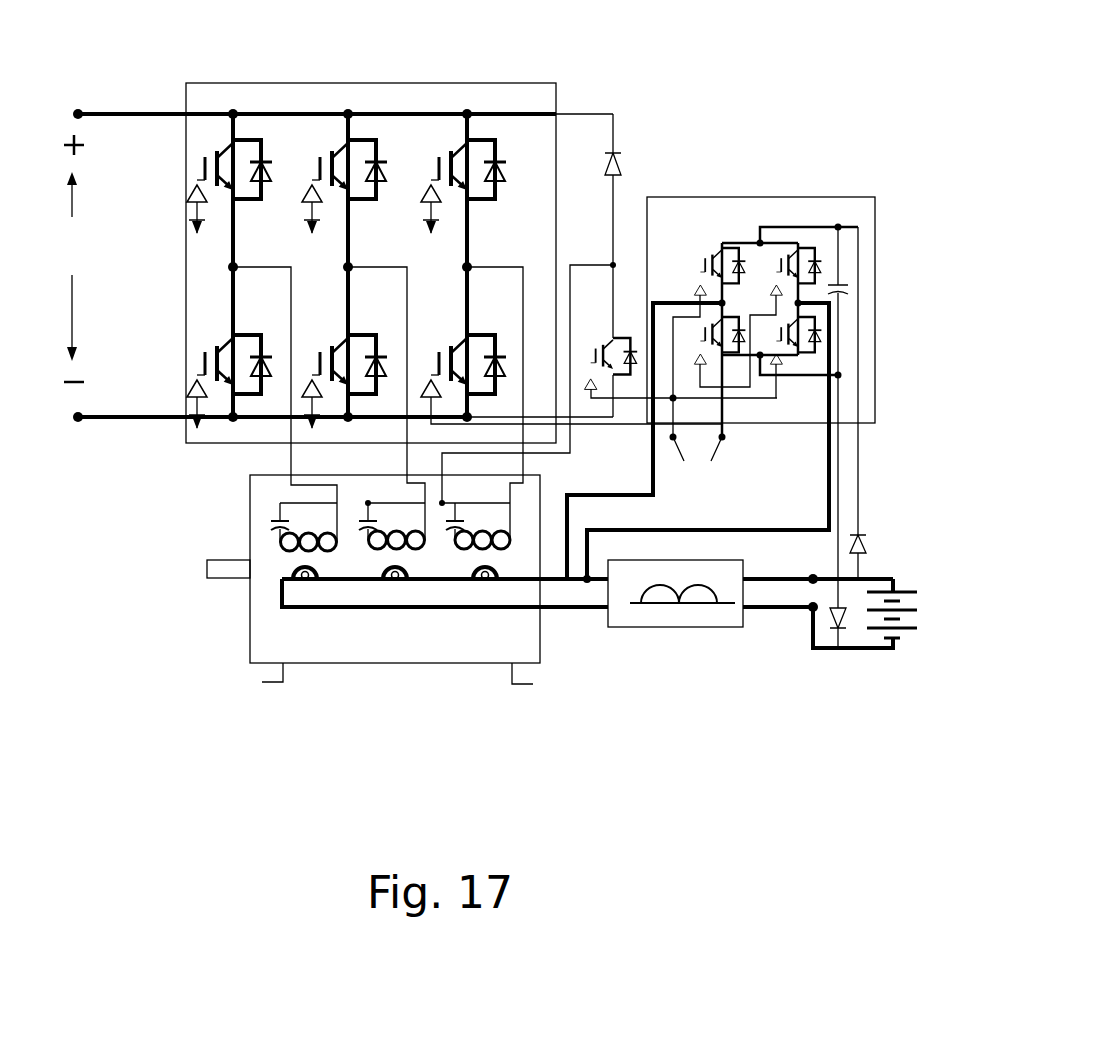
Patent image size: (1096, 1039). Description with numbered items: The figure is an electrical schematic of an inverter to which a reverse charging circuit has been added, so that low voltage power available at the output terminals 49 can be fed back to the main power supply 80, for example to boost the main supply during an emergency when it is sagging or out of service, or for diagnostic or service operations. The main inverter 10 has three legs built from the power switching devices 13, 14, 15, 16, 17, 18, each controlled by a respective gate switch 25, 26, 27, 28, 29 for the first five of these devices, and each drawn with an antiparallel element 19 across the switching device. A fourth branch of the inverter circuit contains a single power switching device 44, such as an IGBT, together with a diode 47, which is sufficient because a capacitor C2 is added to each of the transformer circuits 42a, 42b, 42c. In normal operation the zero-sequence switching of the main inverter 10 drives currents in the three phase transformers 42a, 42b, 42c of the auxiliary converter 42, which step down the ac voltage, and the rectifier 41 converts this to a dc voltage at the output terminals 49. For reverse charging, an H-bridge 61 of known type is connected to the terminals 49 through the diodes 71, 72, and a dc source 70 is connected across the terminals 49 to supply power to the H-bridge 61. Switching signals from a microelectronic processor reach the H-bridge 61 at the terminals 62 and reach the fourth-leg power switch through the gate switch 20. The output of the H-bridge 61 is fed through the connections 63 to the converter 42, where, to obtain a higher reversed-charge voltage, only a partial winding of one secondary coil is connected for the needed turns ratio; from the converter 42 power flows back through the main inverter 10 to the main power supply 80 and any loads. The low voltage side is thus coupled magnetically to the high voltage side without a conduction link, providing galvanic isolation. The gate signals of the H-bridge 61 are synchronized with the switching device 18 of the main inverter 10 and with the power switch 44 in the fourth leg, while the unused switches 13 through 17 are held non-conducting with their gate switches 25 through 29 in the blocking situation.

The main inverter 10 is at (561, 104).
The power switching device 13 is at (204, 182).
The power switching device 14 is at (198, 368).
The power switching device 15 is at (320, 178).
The power switching device 16 is at (312, 377).
The power switching device 17 is at (438, 177).
The power switching device 18 is at (437, 375).
The freewheel diode 19 is at (265, 176).
The gate switch 20 is at (588, 392).
The gate switch 25 is at (195, 189).
The gate switch 26 is at (187, 387).
The gate switch 27 is at (313, 181).
The gate switch 28 is at (300, 393).
The gate switch 29 is at (430, 183).
The rectifier 41 is at (653, 627).
The auxiliary converter 42 is at (384, 588).
The phase transformer 42a is at (292, 560).
The phase transformer 42b is at (373, 567).
The phase transformer 42c is at (477, 563).
The power switching device 44 is at (598, 362).
The diode 47 is at (603, 172).
The output terminals 49 is at (812, 578).
The H-bridge 61 is at (732, 197).
The terminals 62 is at (698, 446).
The connections 63 is at (612, 505).
The dc source 70 is at (877, 630).
The diode 71 is at (828, 618).
The diode 72 is at (853, 545).
The main power supply 80 is at (69, 258).
The capacitor C2 is at (278, 517).